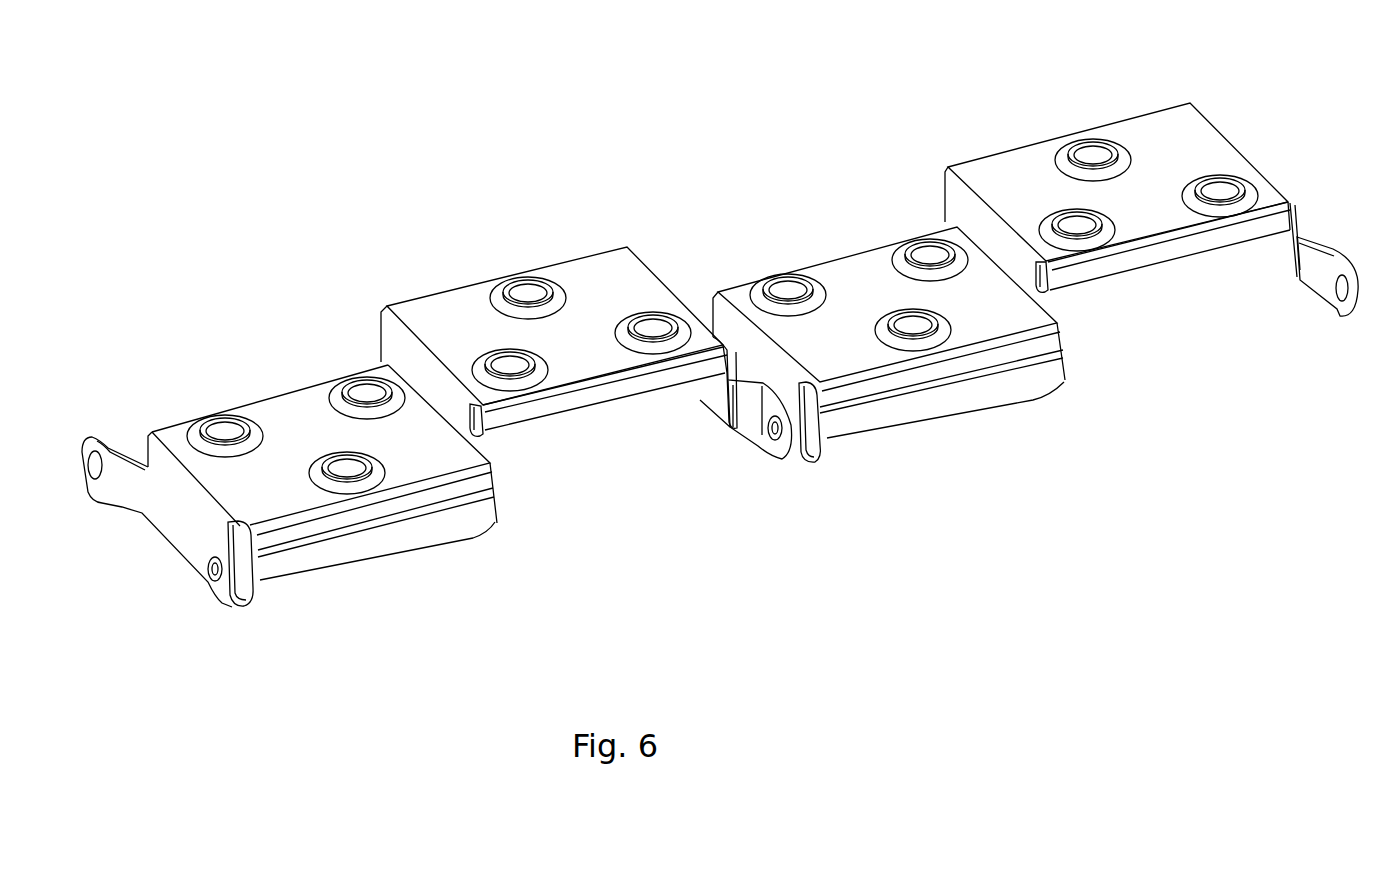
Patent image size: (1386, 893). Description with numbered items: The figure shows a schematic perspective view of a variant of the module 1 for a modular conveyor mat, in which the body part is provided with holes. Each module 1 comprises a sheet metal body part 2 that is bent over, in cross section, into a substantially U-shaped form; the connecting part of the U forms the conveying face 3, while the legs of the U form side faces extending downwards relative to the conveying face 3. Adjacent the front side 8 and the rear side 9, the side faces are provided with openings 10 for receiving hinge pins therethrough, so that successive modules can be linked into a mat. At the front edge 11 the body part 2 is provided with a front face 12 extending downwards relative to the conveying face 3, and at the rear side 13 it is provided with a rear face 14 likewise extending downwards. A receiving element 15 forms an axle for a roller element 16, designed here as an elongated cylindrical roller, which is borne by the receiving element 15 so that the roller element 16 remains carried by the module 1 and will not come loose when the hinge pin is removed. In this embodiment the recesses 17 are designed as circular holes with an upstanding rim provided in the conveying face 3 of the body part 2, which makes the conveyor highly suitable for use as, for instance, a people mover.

The module 1 is at (693, 372).
The sheet metal body part 2 is at (734, 334).
The conveying face 3 is at (465, 307).
The front side 8 is at (389, 552).
The rear side 9 is at (293, 372).
The openings 10 is at (92, 466).
The front edge 11 is at (402, 492).
The front face 12 is at (378, 512).
The rear side 13 is at (242, 407).
The rear face 14 is at (590, 392).
The receiving element 15 is at (222, 603).
The roller element 16 is at (287, 585).
The recesses 17 is at (917, 327).